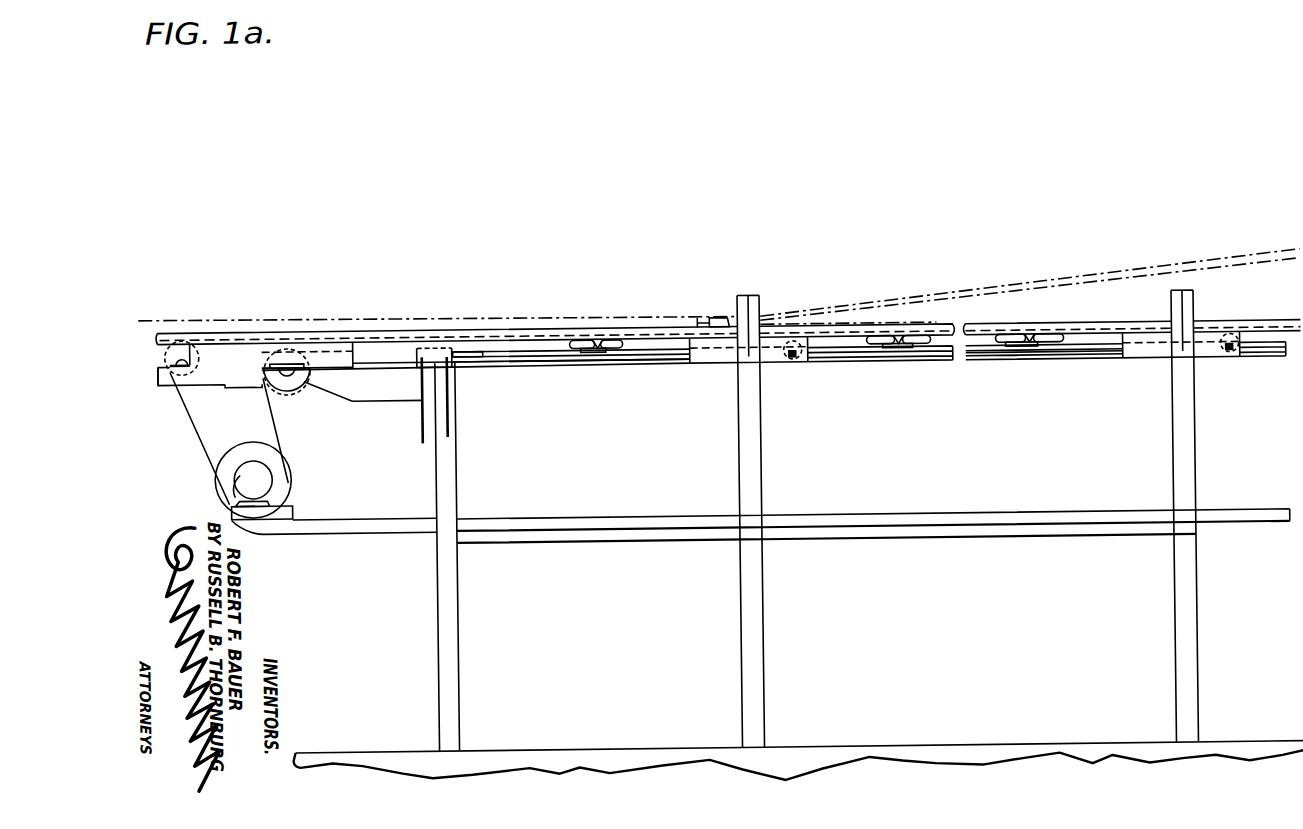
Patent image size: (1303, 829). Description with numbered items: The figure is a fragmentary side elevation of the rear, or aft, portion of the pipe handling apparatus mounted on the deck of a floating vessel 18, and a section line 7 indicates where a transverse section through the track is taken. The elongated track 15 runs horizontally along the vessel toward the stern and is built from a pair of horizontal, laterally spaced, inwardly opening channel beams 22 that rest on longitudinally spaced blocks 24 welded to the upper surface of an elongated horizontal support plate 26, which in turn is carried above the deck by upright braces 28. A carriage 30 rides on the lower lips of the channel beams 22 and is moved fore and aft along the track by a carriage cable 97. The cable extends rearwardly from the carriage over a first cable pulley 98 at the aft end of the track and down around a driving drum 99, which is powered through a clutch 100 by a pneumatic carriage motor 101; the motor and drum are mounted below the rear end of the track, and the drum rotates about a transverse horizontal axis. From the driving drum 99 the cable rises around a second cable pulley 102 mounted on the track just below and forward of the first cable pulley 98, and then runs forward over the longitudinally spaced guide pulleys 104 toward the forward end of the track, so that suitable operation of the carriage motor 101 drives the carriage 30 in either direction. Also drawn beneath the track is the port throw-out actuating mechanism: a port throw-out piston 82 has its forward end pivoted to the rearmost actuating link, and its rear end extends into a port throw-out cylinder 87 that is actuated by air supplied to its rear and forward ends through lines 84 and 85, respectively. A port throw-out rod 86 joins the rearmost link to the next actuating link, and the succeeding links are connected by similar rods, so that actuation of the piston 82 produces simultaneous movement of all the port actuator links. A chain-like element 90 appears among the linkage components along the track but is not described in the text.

The section line 7- 7 is at (141, 315).
The elongated track 15 is at (550, 328).
The floating vessel 18 is at (568, 746).
The channel beams 22 is at (1260, 328).
The blocks 24 is at (720, 356).
The support plate 26 is at (1044, 362).
The upright braces 28 is at (448, 649).
The carriage 30 is at (701, 320).
The port throw-out piston 82 is at (472, 355).
The air line 84 is at (422, 422).
The air line 85 is at (452, 421).
The port throw-out rod 86 is at (650, 358).
The port throw-out cylinder 87 is at (422, 348).
The chain link 90 is at (579, 353).
The carriage cable 97 is at (218, 331).
The first cable pulley 98 is at (165, 343).
The driving drum 99 is at (229, 446).
The clutch 100 is at (278, 465).
The pneumatic carriage motor 101 is at (269, 478).
The second cable pulley 102 is at (292, 391).
The guide pulleys 104 is at (799, 364).